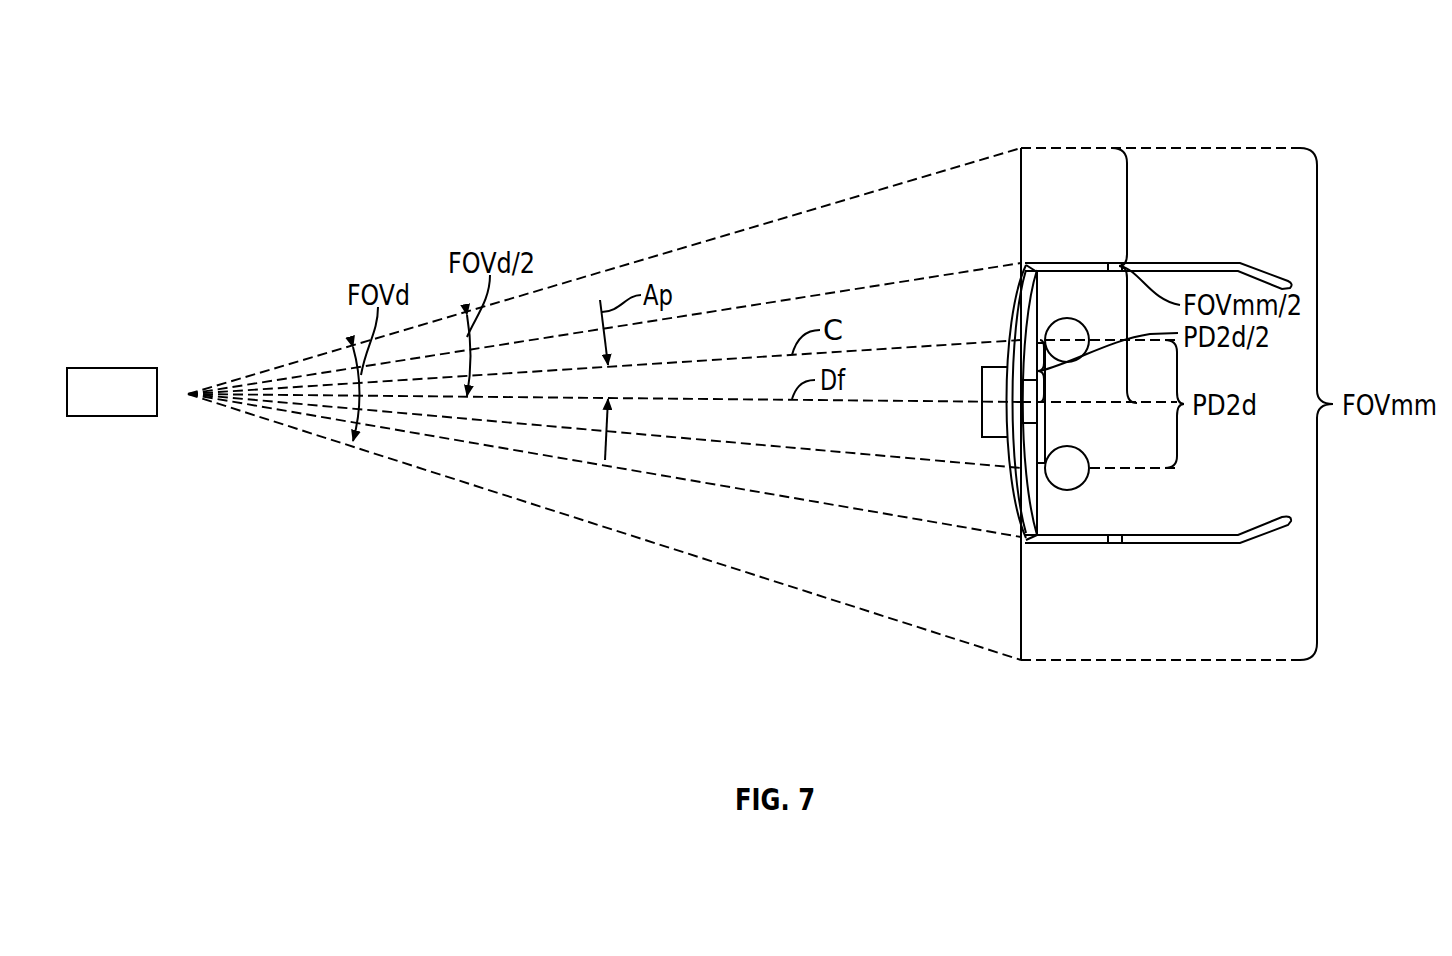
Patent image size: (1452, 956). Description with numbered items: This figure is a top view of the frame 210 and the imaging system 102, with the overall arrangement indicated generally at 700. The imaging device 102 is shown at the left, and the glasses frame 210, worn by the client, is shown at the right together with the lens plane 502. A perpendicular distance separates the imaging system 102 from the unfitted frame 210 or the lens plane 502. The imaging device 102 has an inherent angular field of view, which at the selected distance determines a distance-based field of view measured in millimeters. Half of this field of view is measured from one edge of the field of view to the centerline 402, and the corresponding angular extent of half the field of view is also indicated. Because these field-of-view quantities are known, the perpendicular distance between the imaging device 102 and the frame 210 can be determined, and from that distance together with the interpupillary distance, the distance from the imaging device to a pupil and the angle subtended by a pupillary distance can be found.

The optical system arrangement 700 is at (966, 92).
The lens plane 502 is at (1022, 179).
The frame 210 is at (1139, 260).
The imaging device 102 is at (110, 368).
The centerline 402 is at (781, 401).